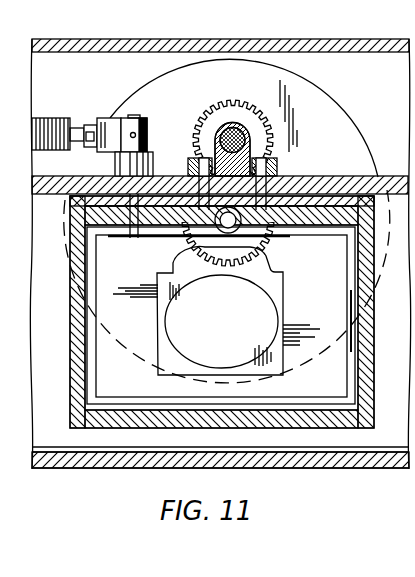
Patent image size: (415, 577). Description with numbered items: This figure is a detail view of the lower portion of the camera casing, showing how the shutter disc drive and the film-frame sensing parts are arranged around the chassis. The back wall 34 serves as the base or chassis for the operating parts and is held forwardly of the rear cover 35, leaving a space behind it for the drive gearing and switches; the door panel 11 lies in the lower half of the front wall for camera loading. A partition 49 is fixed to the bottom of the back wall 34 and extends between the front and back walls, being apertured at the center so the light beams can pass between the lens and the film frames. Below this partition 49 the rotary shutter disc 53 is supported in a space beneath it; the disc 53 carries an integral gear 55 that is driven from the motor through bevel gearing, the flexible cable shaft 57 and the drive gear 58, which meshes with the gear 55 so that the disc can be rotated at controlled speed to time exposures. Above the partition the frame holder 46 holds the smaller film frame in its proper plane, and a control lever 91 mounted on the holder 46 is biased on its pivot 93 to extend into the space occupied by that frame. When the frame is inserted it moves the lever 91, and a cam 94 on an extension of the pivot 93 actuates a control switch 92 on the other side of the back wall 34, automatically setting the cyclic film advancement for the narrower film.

The door panel 11 is at (351, 470).
The back wall 34 is at (319, 178).
The rear cover 35 is at (326, 44).
The frame holder 46 is at (335, 398).
The partition 49 is at (372, 417).
The rotary shutter disc 53 is at (322, 101).
The gear 55 is at (262, 260).
The flexible cable shaft 57 is at (215, 139).
The drive gear 58 is at (252, 108).
The control lever 91 is at (153, 240).
The control switch 92 is at (43, 118).
The pivot 93 is at (133, 118).
The cam 94 is at (70, 175).